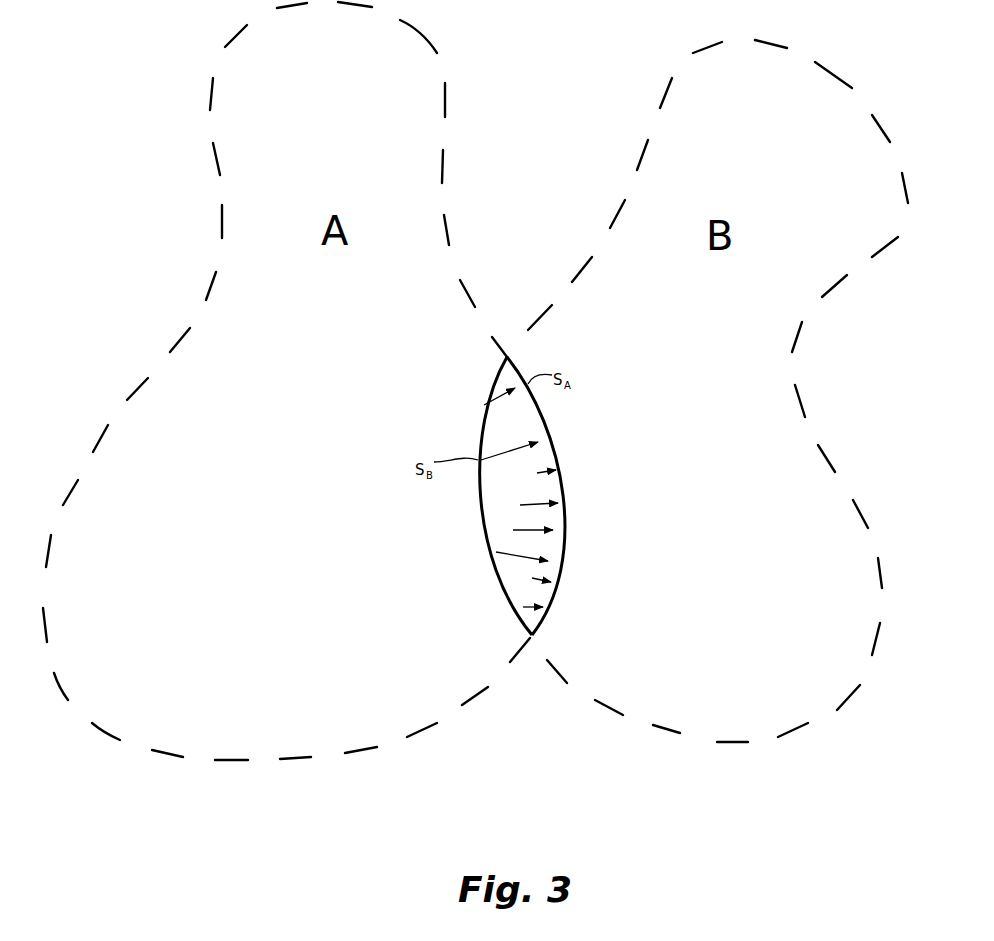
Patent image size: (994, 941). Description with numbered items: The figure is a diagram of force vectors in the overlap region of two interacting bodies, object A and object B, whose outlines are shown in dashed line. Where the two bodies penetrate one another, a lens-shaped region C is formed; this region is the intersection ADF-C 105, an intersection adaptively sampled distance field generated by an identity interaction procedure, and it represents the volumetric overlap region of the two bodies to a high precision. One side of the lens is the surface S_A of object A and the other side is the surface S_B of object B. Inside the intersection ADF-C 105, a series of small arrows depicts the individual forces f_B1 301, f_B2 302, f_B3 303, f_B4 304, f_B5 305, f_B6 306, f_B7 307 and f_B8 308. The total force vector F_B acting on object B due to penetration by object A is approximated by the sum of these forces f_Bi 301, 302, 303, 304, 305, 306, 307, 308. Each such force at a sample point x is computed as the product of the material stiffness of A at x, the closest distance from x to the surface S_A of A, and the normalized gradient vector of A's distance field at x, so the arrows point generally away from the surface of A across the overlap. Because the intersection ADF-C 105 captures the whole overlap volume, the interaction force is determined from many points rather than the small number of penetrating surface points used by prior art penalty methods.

The intersection ADF-C 105 is at (505, 503).
The force f_B1 301 is at (492, 396).
The force f_B2 302 is at (530, 441).
The force f_B3 303 is at (545, 466).
The force f_B4 304 is at (531, 501).
The force f_B5 305 is at (534, 525).
The force f_B6 306 is at (506, 556).
The force f_B7 307 is at (540, 576).
The force f_B8 308 is at (527, 605).